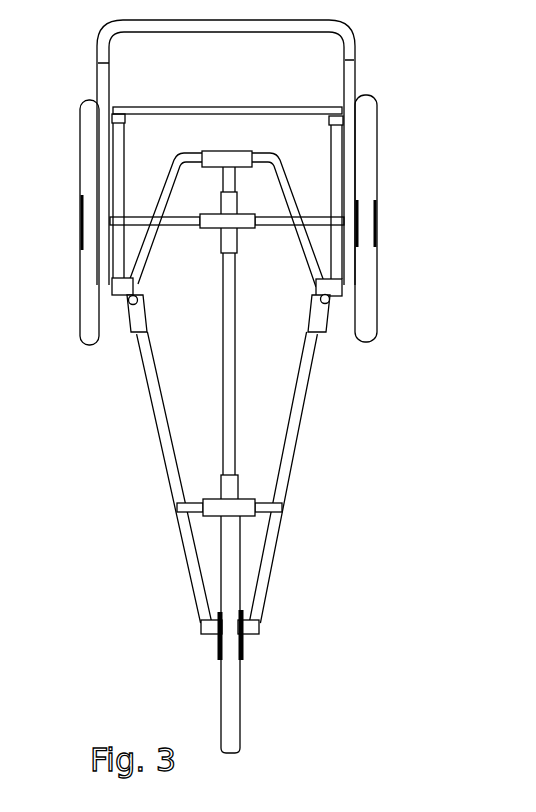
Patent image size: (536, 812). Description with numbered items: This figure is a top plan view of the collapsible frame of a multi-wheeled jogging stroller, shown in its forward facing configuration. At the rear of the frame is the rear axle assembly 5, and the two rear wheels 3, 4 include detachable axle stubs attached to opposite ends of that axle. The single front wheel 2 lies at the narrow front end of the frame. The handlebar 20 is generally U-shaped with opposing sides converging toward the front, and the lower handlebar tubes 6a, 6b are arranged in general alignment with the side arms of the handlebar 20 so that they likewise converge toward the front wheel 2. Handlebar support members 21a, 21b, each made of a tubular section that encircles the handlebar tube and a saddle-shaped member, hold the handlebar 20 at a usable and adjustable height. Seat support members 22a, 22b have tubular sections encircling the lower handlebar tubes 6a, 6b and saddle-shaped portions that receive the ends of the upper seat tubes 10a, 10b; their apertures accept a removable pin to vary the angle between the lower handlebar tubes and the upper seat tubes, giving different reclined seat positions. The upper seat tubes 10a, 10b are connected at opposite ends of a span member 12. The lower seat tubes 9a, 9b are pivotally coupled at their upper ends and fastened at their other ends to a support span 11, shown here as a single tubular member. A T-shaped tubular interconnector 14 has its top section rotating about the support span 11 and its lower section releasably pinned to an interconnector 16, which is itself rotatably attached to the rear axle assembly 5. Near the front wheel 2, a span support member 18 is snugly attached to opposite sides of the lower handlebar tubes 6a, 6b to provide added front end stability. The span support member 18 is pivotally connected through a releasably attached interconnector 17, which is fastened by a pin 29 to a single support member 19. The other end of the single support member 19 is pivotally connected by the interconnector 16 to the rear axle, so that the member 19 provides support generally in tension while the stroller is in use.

The front wheel 2 is at (232, 687).
The rear wheel 3 is at (365, 143).
The rear wheel 4 is at (88, 172).
The rear axle assembly 5 is at (178, 225).
The lower handlebar tube 6a is at (162, 433).
The lower handlebar tube 6b is at (305, 440).
The lower seat tube 9a is at (172, 210).
The lower seat tube 9b is at (295, 198).
The upper seat tube 10a is at (123, 168).
The upper seat tube 10b is at (333, 177).
The support span 11 is at (195, 158).
The span member 12 is at (255, 110).
The interconnector 14 is at (234, 163).
The interconnector 16 is at (233, 240).
The interconnector 17 is at (242, 508).
The span support member 18 is at (270, 508).
The single support member 19 is at (233, 423).
The handlebar 20 is at (267, 23).
The handlebar support member 21a is at (112, 275).
The handlebar support member 21b is at (345, 267).
The seat support member 22a is at (142, 318).
The seat support member 22b is at (313, 313).
The pin 29 is at (223, 478).